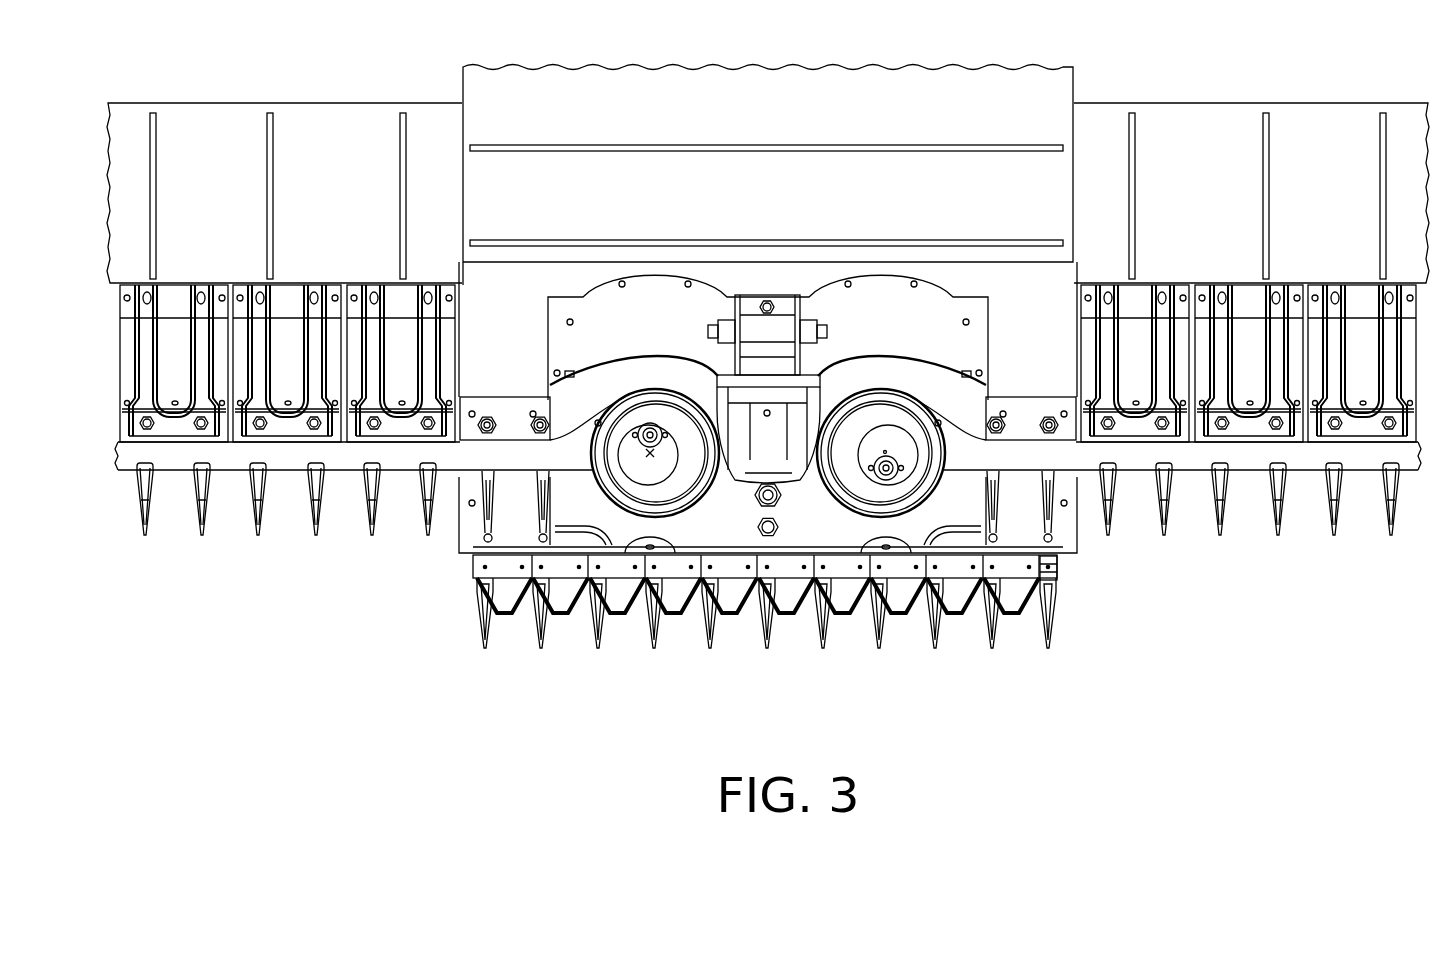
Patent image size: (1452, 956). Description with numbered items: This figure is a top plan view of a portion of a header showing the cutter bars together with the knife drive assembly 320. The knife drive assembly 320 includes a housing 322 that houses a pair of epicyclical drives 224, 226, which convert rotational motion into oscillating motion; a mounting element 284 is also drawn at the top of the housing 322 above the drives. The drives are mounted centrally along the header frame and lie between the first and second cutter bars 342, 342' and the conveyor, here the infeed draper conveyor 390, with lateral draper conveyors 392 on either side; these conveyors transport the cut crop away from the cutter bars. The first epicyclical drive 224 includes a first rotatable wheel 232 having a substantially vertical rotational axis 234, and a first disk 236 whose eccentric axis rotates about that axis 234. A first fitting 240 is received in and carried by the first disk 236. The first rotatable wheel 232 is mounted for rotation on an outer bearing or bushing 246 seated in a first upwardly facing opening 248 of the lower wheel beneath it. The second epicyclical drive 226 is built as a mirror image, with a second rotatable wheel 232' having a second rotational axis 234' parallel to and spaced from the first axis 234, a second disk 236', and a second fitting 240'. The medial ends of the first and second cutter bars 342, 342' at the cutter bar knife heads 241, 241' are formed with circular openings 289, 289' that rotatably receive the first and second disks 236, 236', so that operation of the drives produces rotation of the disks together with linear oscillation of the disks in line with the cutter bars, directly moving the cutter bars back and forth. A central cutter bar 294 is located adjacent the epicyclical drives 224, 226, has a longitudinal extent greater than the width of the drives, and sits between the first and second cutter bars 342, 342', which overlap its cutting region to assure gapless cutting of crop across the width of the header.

The infeed draper conveyor 390 is at (789, 210).
The lateral draper conveyor 392 is at (236, 210).
The knife drive assembly 320 is at (545, 295).
The drive mounting bracket 284 is at (723, 303).
The housing 322 is at (900, 358).
The outer bearing or bushing 246 is at (698, 492).
The first disk 236 is at (639, 450).
The second disk 236' is at (865, 461).
The circular opening 289 is at (639, 567).
The circular opening 289' is at (878, 393).
The first fitting 240 is at (619, 391).
The second fitting 240' is at (867, 574).
The first vertical rotational axis 234 is at (526, 527).
The second vertical rotational axis 234' is at (971, 370).
The cutter bar knife head 241 is at (537, 413).
The cutter bar knife head 241' is at (998, 410).
The first epicyclical drive 224 is at (580, 496).
The second epicyclical drive 226 is at (956, 509).
The first upwardly facing opening 248 is at (610, 508).
The first rotatable wheel 232 is at (617, 594).
The second rotatable wheel 232' is at (899, 593).
The central cutter bar 294 is at (1062, 568).
The first cutter bar 342 is at (287, 518).
The second cutter bar 342' is at (1248, 522).